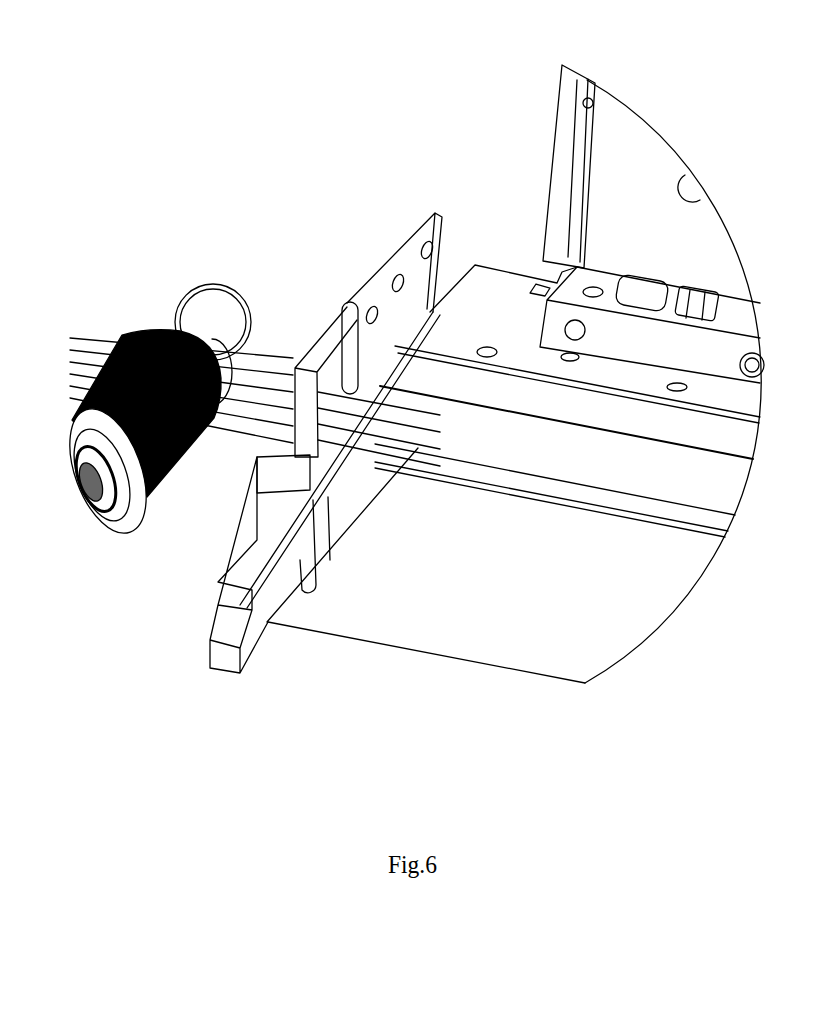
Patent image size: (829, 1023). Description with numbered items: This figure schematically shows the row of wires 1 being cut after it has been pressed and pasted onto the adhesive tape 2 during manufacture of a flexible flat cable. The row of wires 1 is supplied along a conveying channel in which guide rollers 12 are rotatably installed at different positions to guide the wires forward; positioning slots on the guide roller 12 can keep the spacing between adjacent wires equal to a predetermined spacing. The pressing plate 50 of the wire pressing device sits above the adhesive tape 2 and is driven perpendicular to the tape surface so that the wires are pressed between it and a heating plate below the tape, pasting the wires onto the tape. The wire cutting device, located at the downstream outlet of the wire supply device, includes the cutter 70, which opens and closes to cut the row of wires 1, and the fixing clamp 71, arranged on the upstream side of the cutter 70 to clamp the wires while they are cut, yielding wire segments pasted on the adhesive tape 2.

The row of wires 1 is at (270, 347).
The adhesive tape 2 is at (480, 630).
The guide roller 12 is at (157, 318).
The pressing plate 50 is at (510, 283).
The cutter 70 is at (407, 228).
The fixing clamp 71 is at (332, 338).